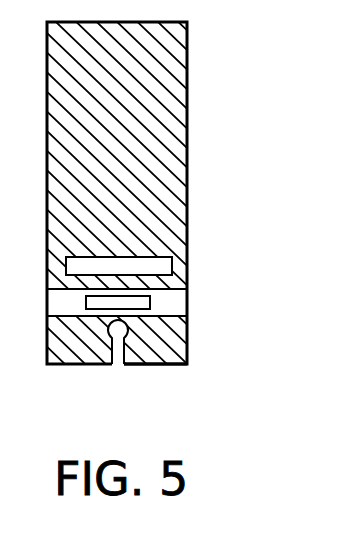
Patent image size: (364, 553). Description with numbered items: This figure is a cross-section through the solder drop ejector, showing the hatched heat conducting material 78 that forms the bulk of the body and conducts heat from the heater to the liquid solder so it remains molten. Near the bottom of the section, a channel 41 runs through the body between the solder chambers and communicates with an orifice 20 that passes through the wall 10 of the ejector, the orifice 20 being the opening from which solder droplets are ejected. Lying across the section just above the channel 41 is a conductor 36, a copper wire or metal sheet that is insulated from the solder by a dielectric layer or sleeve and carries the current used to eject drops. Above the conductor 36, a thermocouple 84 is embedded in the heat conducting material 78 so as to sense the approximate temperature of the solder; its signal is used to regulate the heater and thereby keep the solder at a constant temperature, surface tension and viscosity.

The wall 10 is at (187, 68).
The heat conducting material 78 is at (168, 153).
The thermocouple 84 is at (161, 265).
The conductor 36 is at (141, 301).
The orifice 20 is at (118, 333).
The channel 41 is at (120, 335).